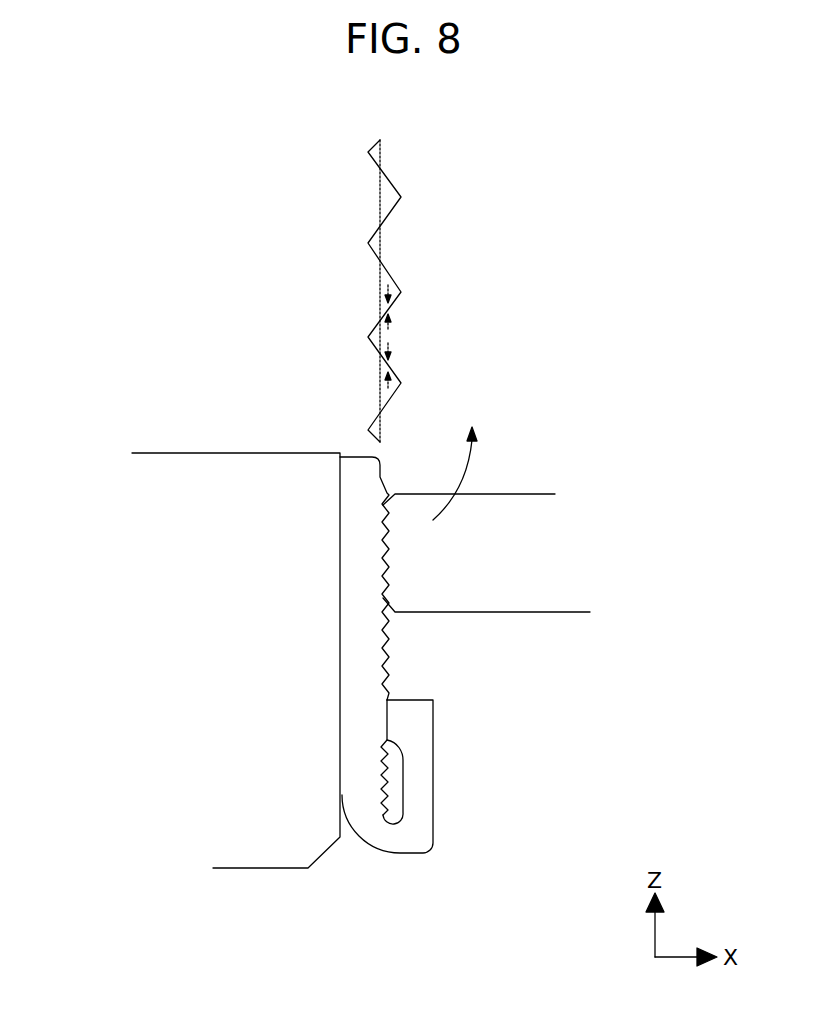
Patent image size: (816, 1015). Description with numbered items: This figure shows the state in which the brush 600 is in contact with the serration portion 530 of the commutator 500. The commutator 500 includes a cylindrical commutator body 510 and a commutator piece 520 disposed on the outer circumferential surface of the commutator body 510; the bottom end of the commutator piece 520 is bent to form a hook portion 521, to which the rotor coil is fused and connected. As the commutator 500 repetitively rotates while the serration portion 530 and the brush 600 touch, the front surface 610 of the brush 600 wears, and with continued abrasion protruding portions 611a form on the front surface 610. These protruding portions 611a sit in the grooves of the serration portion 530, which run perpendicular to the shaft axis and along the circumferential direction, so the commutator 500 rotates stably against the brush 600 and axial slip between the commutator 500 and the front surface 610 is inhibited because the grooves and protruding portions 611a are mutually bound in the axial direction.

The commutator 500 is at (108, 733).
The commutator body 510 is at (250, 837).
The commutator piece 520 is at (357, 737).
The hook portion 521 is at (418, 775).
The serration portion 530 is at (370, 187).
The brush 600 is at (580, 536).
The front surface 610 is at (370, 332).
The protruding portions 611a is at (398, 302).